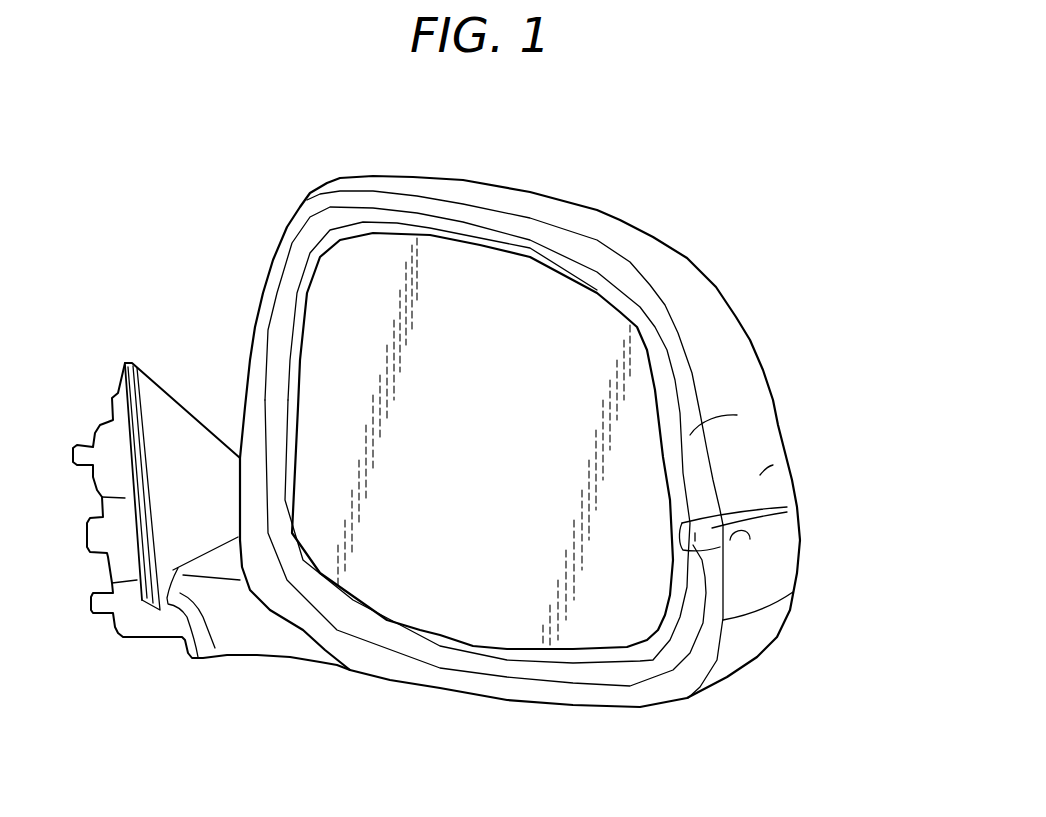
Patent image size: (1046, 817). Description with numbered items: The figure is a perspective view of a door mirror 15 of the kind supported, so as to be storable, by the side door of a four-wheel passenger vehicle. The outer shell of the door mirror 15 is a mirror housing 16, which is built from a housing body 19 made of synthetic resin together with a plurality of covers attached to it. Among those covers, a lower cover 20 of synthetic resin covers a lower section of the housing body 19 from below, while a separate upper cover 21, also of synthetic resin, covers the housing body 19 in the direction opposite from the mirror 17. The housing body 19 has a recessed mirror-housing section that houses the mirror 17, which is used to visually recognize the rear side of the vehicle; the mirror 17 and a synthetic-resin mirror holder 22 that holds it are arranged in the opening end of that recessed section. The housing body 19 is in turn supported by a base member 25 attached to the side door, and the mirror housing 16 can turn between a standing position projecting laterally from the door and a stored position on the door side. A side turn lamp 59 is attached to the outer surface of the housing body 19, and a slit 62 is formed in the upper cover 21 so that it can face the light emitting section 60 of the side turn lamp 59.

The door mirror 15 is at (398, 682).
The mirror housing 16 is at (898, 397).
The mirror 17 is at (488, 428).
The housing body 19 is at (737, 415).
The lower cover 20 is at (783, 620).
The upper cover 21 is at (773, 465).
The mirror holder 22 is at (490, 653).
The base member 25 is at (250, 640).
The side turn lamp 59 is at (742, 516).
The light emitting section 60 is at (787, 507).
The slit 62 is at (720, 550).